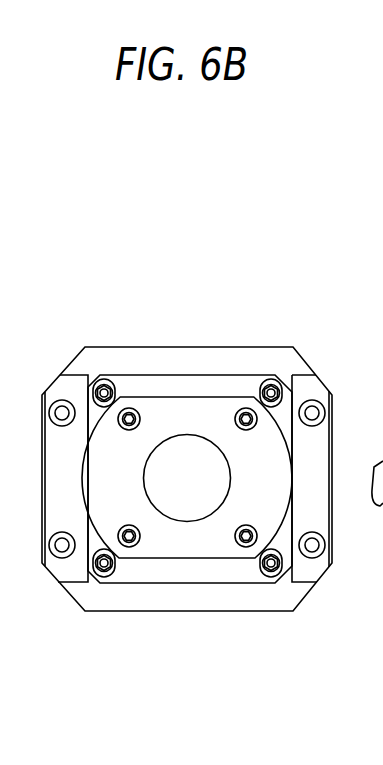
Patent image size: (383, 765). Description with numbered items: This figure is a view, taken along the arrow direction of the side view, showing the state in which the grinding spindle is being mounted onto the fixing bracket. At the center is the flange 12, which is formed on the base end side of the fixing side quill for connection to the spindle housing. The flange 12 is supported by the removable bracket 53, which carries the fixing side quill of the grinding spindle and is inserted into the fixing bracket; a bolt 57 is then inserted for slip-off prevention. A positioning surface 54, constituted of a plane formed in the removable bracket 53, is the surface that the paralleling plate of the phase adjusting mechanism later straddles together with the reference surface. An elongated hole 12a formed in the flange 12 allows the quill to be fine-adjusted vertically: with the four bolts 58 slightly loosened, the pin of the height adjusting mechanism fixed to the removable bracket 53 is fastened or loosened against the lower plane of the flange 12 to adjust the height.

The flange 12 is at (147, 387).
The elongated hole 12a is at (116, 560).
The removable bracket 53 is at (277, 347).
The positioning surface 54 is at (209, 347).
The bolt 57 is at (322, 405).
The bolts 58 is at (260, 565).